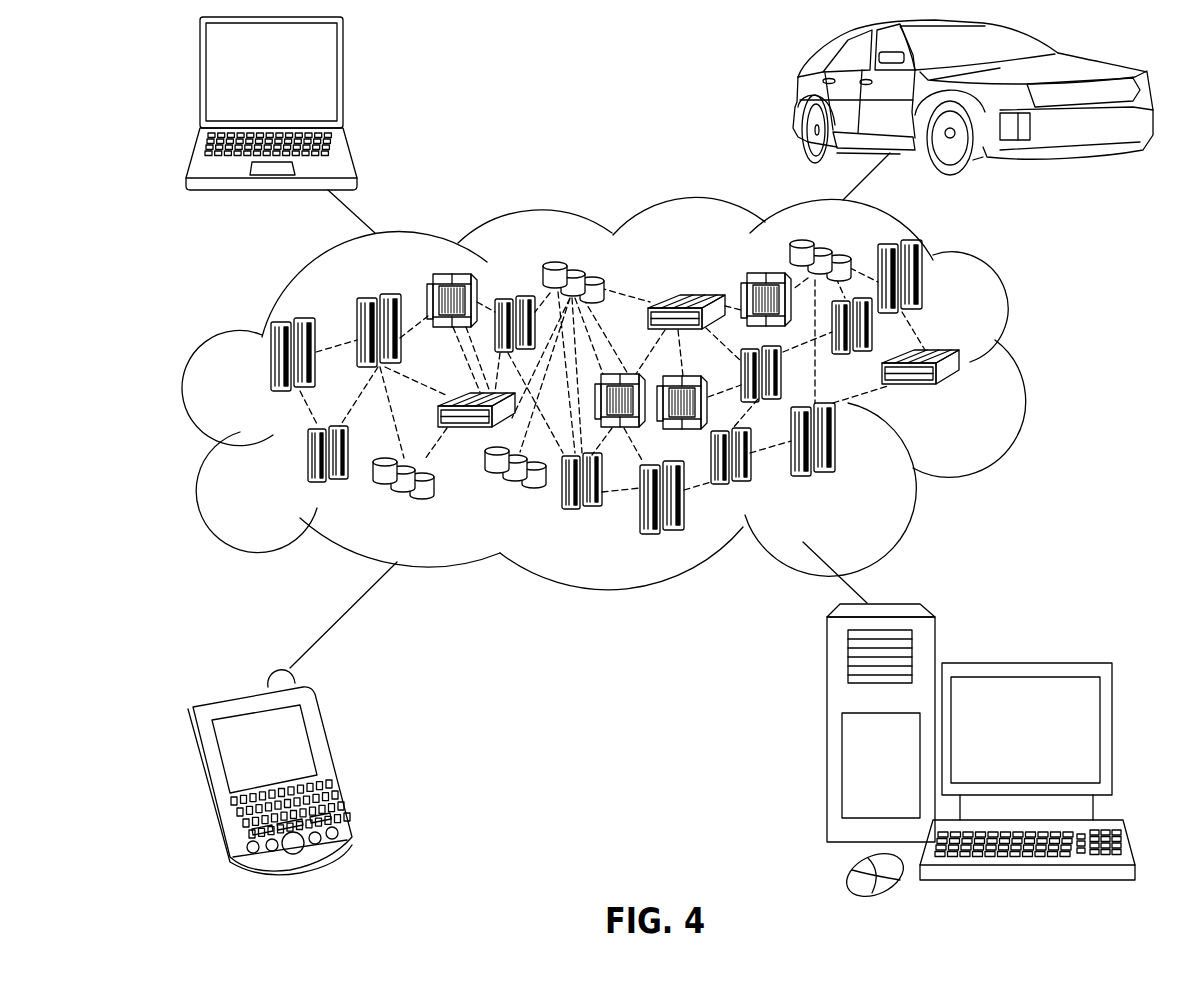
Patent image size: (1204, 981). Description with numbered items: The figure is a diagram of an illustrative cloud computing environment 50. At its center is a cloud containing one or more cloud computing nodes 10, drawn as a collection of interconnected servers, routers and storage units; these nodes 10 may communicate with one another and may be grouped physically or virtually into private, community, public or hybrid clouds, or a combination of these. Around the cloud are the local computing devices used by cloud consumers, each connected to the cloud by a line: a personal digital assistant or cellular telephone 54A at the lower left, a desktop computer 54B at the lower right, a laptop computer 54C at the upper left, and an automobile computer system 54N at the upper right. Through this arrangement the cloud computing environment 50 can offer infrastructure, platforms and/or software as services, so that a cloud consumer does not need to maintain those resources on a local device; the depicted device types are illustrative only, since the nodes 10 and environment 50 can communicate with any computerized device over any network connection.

The cloud computing nodes 10 is at (970, 398).
The cloud computing environment 50 is at (1022, 365).
The personal digital assistant or cellular telephone 54A is at (333, 760).
The desktop computer 54B is at (1023, 663).
The laptop computer 54C is at (343, 80).
The automobile computer system 54N is at (798, 99).